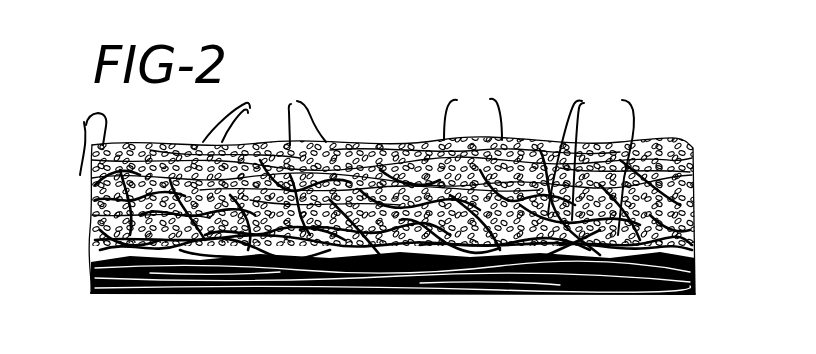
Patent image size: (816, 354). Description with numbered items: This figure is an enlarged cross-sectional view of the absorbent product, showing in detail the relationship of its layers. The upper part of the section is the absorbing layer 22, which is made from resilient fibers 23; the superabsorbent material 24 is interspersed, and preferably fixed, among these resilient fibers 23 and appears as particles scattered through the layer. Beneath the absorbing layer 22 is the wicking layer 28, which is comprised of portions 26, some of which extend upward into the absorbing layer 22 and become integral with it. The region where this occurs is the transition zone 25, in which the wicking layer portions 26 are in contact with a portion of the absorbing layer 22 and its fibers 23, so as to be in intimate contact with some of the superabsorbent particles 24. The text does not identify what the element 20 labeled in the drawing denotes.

The long fibers 20 is at (591, 161).
The absorbing layer 22 is at (697, 142).
The resilient fibers 23 is at (274, 132).
The superabsorbent material 24 is at (264, 116).
The transition zone 25 is at (87, 200).
The wicking layer portions 26 is at (112, 293).
The wicking layer 28 is at (697, 256).